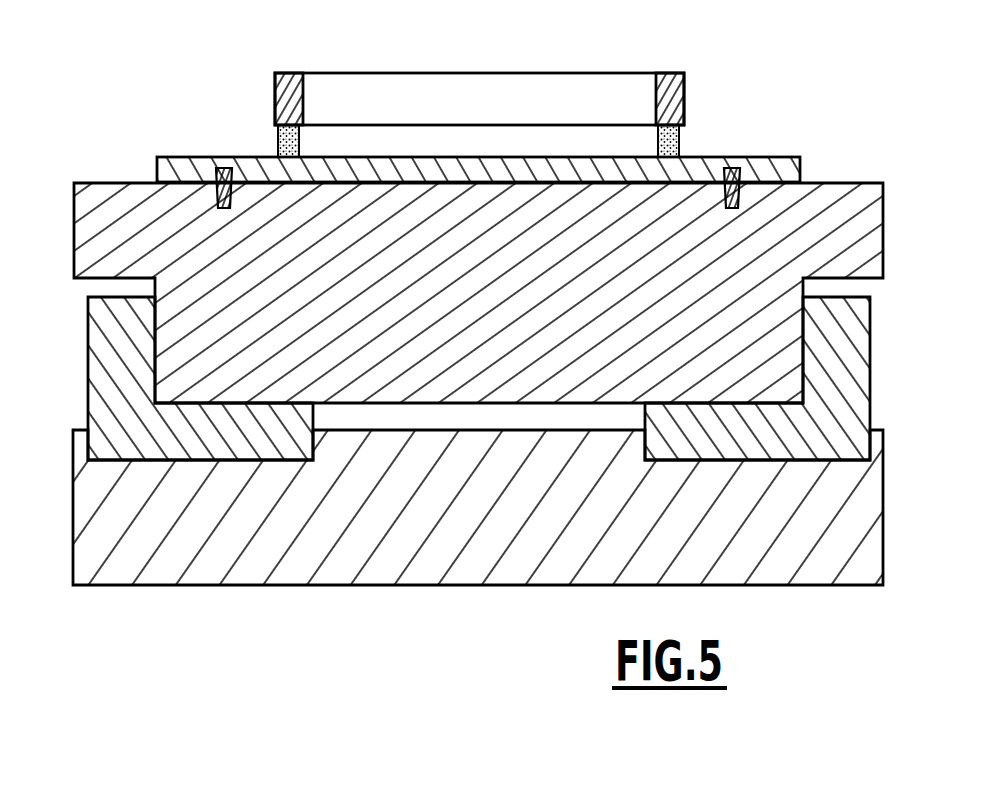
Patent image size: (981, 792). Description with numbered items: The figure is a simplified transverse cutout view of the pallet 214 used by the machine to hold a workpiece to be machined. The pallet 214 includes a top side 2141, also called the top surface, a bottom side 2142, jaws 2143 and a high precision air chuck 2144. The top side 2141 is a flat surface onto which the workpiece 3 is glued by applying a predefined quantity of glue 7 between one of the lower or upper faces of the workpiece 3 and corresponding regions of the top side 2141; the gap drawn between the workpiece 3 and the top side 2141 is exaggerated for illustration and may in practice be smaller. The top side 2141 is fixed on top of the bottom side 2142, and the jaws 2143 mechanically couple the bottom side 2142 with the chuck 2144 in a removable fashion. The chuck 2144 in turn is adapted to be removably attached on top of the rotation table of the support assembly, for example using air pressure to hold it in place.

The pallet 214 is at (755, 50).
The workpiece 3 is at (565, 73).
The glue 7 is at (277, 143).
The top side 2141 is at (178, 168).
The bottom side 2142 is at (110, 240).
The jaws 2143 is at (113, 397).
The high precision air chuck 2144 is at (107, 522).